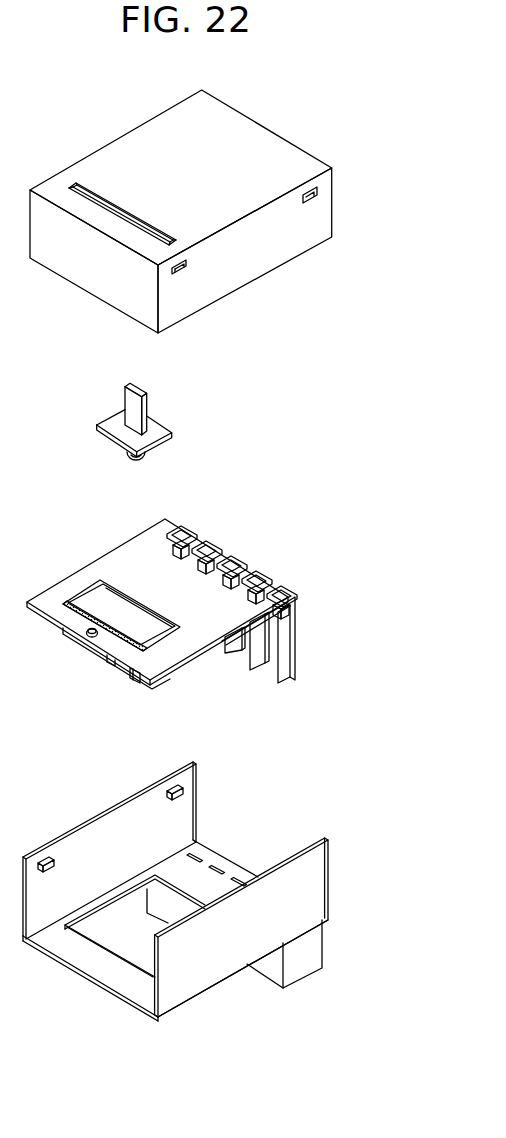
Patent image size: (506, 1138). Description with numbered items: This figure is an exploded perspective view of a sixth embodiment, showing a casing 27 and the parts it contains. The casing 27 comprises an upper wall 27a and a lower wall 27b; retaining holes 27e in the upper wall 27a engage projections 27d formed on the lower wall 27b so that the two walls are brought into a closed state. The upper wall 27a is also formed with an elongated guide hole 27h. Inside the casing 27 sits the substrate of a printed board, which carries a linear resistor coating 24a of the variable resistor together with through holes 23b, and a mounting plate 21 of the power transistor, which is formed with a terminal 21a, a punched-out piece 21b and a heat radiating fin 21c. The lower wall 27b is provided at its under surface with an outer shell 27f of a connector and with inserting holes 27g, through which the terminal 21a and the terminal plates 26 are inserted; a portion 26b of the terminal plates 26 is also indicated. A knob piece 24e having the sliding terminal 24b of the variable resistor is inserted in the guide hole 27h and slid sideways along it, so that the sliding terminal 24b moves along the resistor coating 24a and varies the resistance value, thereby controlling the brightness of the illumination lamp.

The casing 27 is at (180, 553).
The upper wall 27a is at (237, 133).
The guide hole 27h is at (118, 214).
The retaining holes 27e is at (187, 268).
The lower wall 27b is at (310, 868).
The projections 27d is at (173, 783).
The inserting holes 27g is at (220, 868).
The outer shell of connector 27f is at (307, 960).
The knob piece 24e is at (138, 410).
The sliding terminal 24b is at (130, 452).
The resistor coating 24a is at (82, 598).
The through holes 23b is at (67, 633).
The mounting plate 21 is at (102, 655).
The terminal 21a is at (238, 642).
The punched-out piece 21b is at (238, 562).
The heat radiating fin 21c is at (136, 682).
The terminal plates 26 is at (287, 624).
The bracket upper portion 26b is at (273, 588).